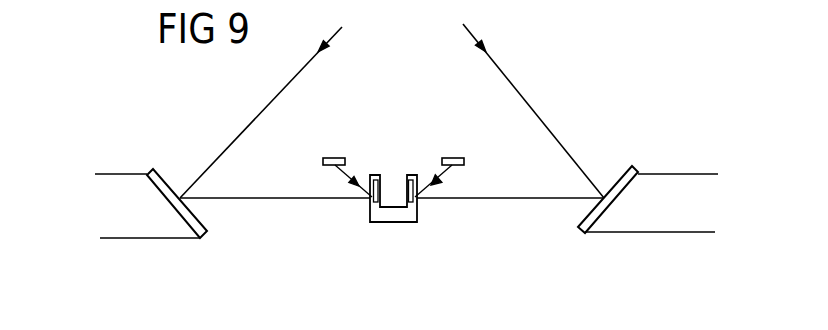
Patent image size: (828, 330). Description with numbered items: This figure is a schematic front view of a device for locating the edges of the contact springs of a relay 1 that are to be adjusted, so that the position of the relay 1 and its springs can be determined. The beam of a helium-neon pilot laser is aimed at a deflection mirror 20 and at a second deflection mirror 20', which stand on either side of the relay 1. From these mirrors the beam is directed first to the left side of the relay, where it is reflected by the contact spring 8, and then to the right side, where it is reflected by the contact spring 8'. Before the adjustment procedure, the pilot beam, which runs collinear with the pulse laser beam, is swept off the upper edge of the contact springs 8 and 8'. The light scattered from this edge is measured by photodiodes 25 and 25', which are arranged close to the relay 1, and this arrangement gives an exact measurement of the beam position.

The relay 1 is at (390, 182).
The contact spring 8 is at (369, 162).
The contact spring 8' is at (423, 161).
The deflection mirror 20 is at (171, 207).
The deflection mirror 20' is at (648, 199).
The photodiode 25 is at (347, 150).
The photodiode 25' is at (441, 150).